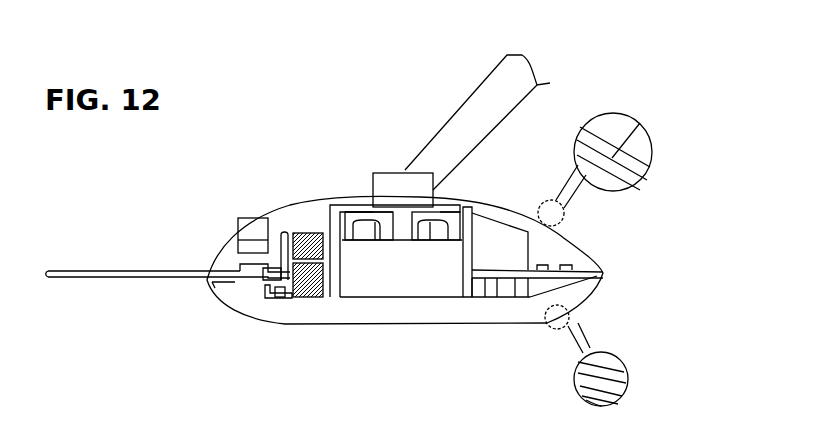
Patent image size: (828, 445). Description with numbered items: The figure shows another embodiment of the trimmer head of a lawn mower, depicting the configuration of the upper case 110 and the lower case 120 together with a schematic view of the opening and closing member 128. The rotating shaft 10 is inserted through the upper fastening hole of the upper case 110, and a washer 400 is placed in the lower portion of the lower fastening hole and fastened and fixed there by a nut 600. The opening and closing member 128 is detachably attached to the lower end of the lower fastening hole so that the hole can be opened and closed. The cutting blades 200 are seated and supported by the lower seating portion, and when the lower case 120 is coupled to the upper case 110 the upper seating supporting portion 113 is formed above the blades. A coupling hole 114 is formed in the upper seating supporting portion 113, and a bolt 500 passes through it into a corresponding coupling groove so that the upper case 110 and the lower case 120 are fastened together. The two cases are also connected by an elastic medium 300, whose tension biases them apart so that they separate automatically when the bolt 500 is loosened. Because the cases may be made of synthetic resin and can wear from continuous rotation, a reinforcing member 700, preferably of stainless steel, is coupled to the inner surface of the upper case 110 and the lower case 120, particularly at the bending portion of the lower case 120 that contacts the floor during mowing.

The rotating shaft 10 is at (487, 120).
The nut 600 is at (378, 207).
The washer 400 is at (390, 232).
The coupling hole 114 is at (257, 226).
The bolt 500 is at (256, 246).
The cutting blades 200 is at (100, 270).
The upper seating supporting portion 113 is at (225, 280).
The elastic medium 300 is at (302, 298).
The opening/closing member 128 is at (405, 325).
The reinforcing member 700 is at (612, 158).
The upper case 110 is at (648, 152).
The lower case 120 is at (586, 400).